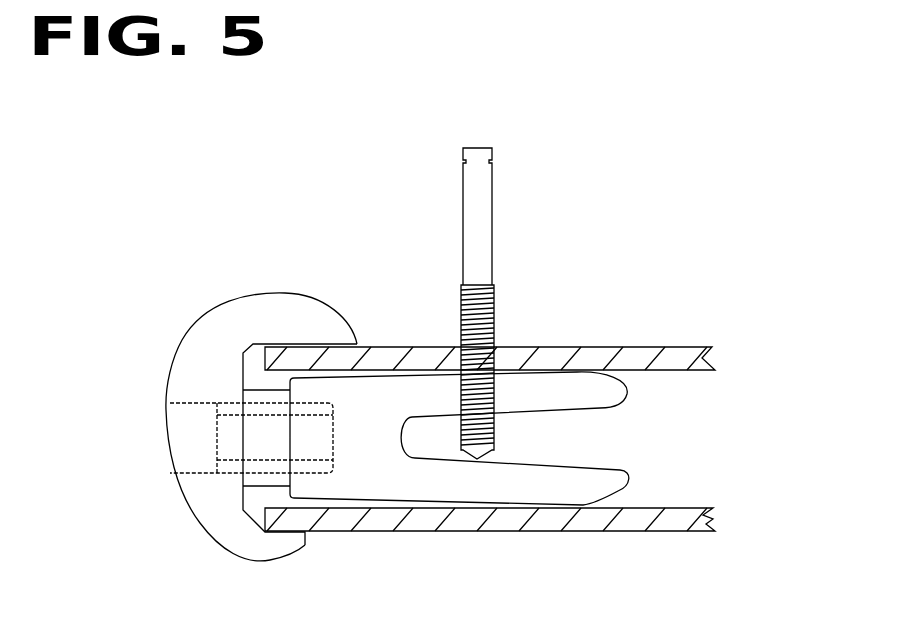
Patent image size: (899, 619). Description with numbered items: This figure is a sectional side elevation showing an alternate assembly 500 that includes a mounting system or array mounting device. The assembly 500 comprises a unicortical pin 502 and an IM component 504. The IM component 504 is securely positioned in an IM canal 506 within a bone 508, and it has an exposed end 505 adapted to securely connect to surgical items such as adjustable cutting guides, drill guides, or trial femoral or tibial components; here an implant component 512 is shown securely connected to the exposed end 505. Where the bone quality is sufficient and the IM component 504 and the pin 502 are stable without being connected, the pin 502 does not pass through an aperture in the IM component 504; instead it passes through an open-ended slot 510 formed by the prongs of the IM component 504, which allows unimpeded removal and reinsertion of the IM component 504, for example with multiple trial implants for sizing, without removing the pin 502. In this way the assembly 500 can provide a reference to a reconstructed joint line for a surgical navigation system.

The assembly 500 is at (521, 258).
The unicortical pin 502 is at (462, 203).
The IM component 504 is at (518, 396).
The exposed end 505 is at (243, 513).
The IM canal 506 is at (675, 479).
The bone 508 is at (698, 347).
The open-ended slot 510 is at (565, 466).
The implant component 512 is at (233, 296).